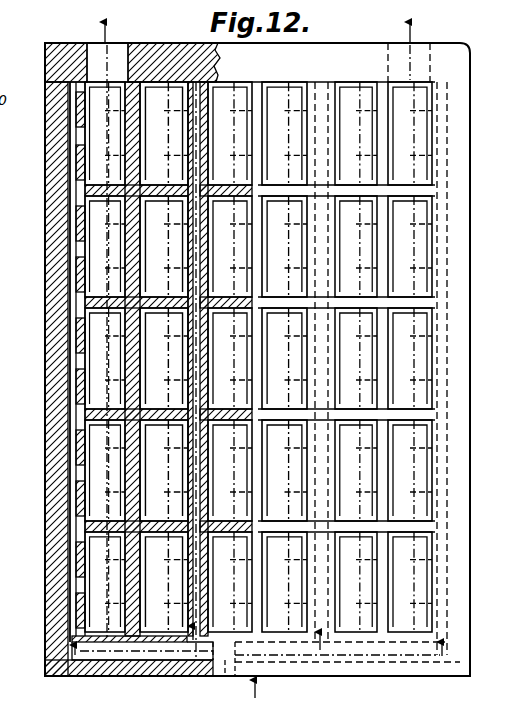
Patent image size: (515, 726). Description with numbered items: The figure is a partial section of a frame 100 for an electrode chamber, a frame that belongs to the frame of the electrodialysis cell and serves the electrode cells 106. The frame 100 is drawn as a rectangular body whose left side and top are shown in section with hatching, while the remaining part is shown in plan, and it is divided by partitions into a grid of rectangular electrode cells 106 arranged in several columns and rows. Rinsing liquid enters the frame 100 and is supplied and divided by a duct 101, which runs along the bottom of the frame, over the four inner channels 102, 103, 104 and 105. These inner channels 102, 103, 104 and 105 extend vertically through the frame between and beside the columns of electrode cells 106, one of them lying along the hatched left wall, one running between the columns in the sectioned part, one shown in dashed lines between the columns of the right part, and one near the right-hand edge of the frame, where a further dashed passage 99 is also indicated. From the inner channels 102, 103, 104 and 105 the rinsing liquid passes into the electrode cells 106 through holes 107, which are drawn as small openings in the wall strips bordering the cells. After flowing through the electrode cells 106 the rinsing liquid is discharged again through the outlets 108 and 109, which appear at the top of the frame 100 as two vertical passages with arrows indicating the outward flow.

The side flow channel 99 is at (442, 527).
The frame 100 is at (462, 200).
The duct 101 is at (118, 648).
The inner channel 102 is at (380, 625).
The inner channel 103 is at (72, 607).
The inner channel 104 is at (188, 644).
The inner channel 105 is at (325, 632).
The electrode cell 106 is at (112, 360).
The hole 107 is at (80, 517).
The discharge 108 is at (109, 38).
The discharge 109 is at (413, 38).